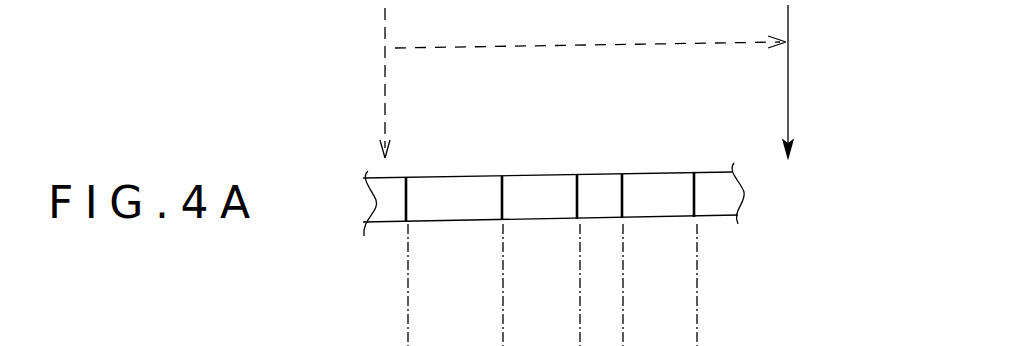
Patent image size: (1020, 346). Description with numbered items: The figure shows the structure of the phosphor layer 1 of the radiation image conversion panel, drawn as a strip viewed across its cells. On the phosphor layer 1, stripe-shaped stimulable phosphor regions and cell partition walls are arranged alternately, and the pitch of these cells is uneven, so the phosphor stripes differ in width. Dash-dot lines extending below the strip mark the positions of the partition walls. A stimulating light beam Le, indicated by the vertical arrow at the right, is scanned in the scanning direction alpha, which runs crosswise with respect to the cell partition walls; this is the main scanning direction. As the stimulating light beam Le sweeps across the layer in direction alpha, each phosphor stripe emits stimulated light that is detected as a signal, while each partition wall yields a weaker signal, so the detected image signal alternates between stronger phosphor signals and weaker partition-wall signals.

The phosphor layer 1 is at (769, 201).
The stimulating light beam Le is at (800, 80).
The direction of arrow α alpha is at (590, 29).